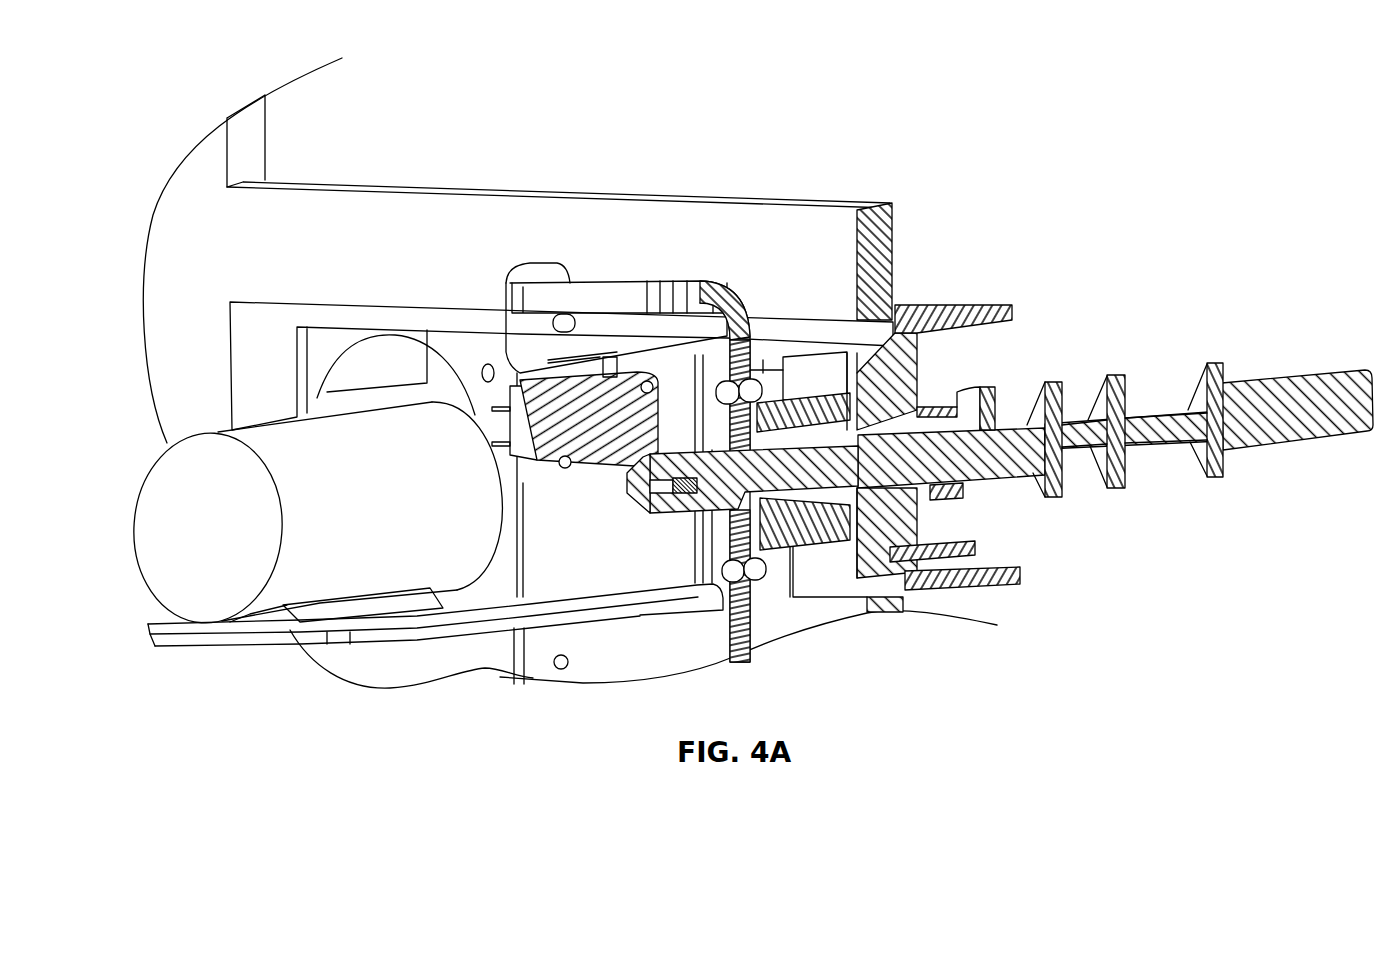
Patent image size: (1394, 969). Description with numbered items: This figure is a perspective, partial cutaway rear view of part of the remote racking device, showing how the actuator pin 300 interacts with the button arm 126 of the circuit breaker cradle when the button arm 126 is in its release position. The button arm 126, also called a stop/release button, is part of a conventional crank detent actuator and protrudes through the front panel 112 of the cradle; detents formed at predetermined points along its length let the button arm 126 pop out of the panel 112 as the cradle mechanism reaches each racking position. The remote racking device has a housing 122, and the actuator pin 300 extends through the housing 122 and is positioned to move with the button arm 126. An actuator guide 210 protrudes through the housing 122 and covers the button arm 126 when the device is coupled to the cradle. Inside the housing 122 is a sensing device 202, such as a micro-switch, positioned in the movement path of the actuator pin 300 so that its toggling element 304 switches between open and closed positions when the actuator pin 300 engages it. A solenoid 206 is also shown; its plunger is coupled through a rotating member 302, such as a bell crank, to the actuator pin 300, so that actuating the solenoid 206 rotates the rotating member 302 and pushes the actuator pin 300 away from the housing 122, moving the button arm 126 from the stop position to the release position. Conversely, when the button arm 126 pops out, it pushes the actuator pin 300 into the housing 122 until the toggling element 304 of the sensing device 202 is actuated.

The housing 122 is at (400, 205).
The front panel 112 is at (943, 303).
The solenoid 206 is at (366, 531).
The button arm 126 is at (1278, 435).
The sensing device 202 is at (565, 470).
The toggling element 304 is at (620, 487).
The rotating member 302 is at (667, 495).
The actuator pin 300 is at (803, 460).
The actuator guide 210 is at (797, 527).